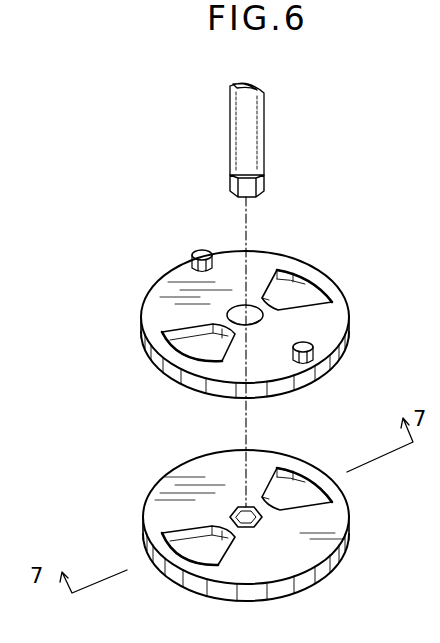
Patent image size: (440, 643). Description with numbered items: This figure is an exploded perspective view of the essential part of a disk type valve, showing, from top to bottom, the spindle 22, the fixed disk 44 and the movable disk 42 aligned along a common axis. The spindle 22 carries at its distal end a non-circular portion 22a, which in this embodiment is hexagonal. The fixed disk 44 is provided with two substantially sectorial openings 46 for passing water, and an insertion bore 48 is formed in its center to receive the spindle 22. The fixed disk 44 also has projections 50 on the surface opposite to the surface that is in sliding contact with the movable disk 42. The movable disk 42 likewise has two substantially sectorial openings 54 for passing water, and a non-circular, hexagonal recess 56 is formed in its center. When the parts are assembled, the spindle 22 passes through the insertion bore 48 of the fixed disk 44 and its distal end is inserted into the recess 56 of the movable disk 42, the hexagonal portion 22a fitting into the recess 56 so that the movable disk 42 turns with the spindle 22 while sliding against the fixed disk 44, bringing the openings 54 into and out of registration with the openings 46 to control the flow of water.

The spindle 22 is at (255, 136).
The non-circular portion 22a is at (258, 180).
The movable disk 42 is at (345, 535).
The fixed disk 44 is at (332, 315).
The sectorial openings 46 is at (312, 293).
The insertion bore 48 is at (260, 325).
The projections 50 is at (202, 252).
The sectorial openings 54 is at (303, 490).
The recess 56 is at (249, 523).